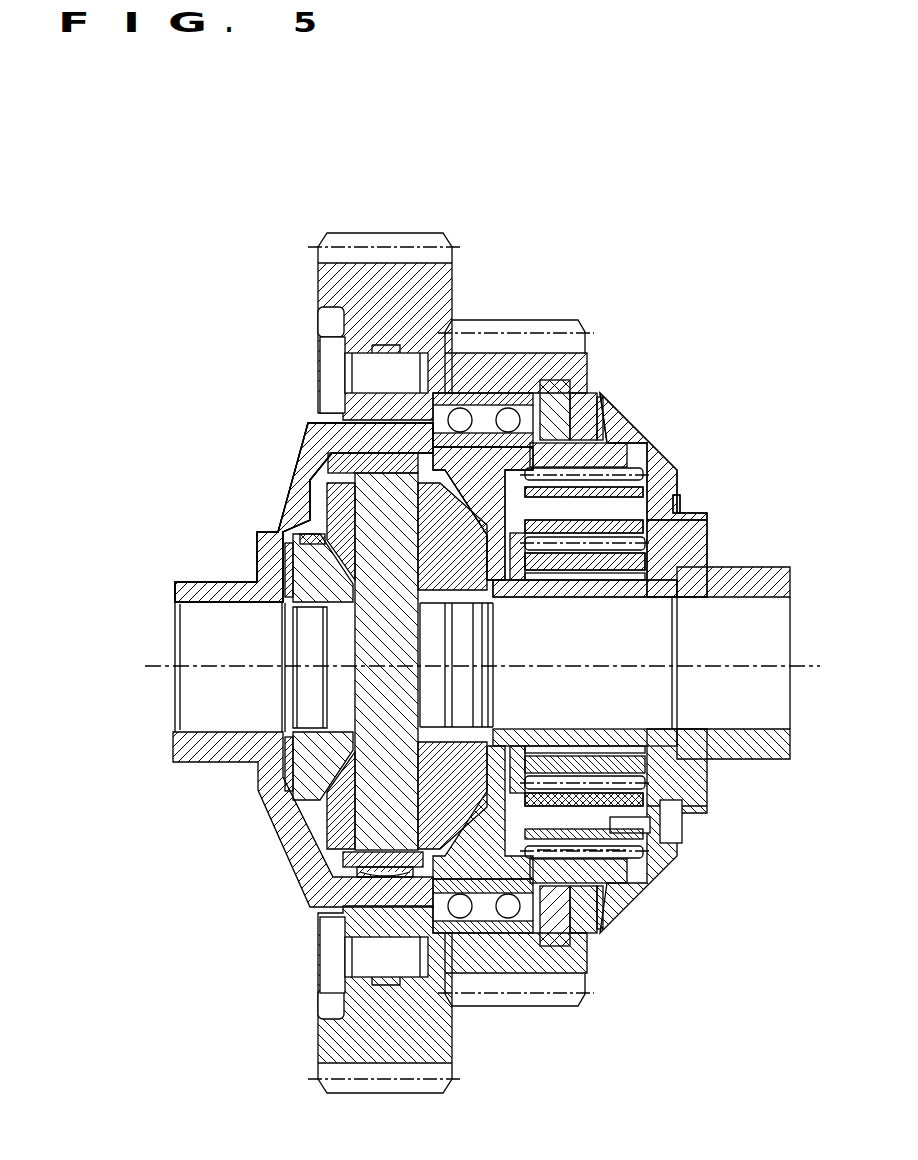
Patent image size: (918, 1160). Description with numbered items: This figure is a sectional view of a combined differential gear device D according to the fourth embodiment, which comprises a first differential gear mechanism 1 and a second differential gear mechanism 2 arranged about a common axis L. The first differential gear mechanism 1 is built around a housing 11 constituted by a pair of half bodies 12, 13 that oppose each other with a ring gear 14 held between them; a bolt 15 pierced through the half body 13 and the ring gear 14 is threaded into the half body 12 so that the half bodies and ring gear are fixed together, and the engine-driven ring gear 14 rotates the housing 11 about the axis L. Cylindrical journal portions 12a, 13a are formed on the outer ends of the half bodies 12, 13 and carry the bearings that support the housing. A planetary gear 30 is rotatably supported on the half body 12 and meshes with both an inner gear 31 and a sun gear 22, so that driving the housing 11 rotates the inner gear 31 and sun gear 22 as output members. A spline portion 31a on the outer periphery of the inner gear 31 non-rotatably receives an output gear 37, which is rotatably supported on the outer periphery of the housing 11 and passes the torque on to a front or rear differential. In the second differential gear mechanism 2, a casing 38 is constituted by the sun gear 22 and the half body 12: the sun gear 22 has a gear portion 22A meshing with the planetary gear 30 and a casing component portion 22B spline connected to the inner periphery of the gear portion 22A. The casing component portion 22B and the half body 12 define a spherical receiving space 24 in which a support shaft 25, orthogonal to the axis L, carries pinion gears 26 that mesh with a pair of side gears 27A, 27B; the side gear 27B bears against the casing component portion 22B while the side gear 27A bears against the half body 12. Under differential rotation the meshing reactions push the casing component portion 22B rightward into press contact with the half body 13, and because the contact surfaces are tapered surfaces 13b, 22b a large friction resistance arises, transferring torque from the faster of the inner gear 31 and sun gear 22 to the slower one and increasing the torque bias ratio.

The first differential gear mechanism 1 is at (610, 436).
The second differential gear mechanism 2 is at (447, 856).
The housing 11 is at (292, 455).
The half body 12 is at (306, 500).
The journal portion 12a is at (195, 574).
The half body 13 is at (556, 822).
The journal portion 13a is at (763, 567).
The tapered surface 13b is at (480, 432).
The ring gear 14 is at (386, 232).
The bolt 15 is at (328, 362).
The sun gear 22 is at (826, 447).
The gear portion 22A is at (648, 525).
The casing component portion 22B is at (642, 556).
The tapered surface 22b is at (550, 434).
The receiving space 24 is at (322, 487).
The support shaft 25 is at (370, 772).
The pinion gear 26 is at (328, 537).
The side gear 27A is at (312, 768).
The side gear 27B is at (583, 940).
The planetary gear 30 is at (662, 492).
The inner gear 31 is at (607, 446).
The spline portion 31a is at (592, 404).
The output gear 37 is at (527, 320).
The casing 38 is at (583, 945).
The combined differential gear device D is at (543, 172).
The axis L is at (821, 662).